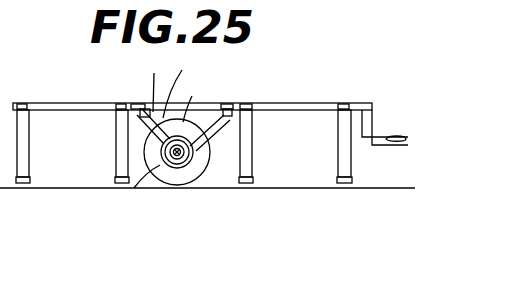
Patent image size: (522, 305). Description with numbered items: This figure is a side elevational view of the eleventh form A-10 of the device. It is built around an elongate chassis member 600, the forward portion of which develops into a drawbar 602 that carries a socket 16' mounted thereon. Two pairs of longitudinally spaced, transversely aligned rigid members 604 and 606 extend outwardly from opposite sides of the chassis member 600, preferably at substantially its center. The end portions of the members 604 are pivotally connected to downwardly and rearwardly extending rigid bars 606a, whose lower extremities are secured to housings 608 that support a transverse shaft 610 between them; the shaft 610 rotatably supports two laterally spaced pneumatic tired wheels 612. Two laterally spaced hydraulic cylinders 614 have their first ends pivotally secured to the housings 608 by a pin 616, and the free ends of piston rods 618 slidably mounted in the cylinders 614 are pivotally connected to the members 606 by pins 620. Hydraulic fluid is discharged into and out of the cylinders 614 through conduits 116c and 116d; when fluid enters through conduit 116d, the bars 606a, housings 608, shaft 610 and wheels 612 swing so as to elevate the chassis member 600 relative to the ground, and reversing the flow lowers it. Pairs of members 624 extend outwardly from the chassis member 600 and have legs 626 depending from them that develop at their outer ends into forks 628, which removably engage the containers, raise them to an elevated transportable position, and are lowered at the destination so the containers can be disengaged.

The chassis member 600 is at (157, 83).
The drawbar 602 is at (372, 147).
The rigid members 604 is at (238, 103).
The rigid members 606 is at (138, 104).
The rigid bars 606a is at (240, 143).
The housings 608 is at (185, 168).
The transverse shaft 610 is at (175, 174).
The pneumatic tired wheels 612 is at (170, 162).
The hydraulic cylinders 614 is at (158, 126).
The pin 616 is at (130, 188).
The piston rods 618 is at (148, 118).
The pins 620 is at (138, 111).
The pair of members 624 is at (20, 103).
The legs 626 is at (116, 160).
The forks 628 is at (20, 184).
The conduit 116c is at (197, 88).
The conduit 116d is at (207, 99).
The eleventh form of the device A-10 is at (222, 110).
The socket 16' is at (401, 121).